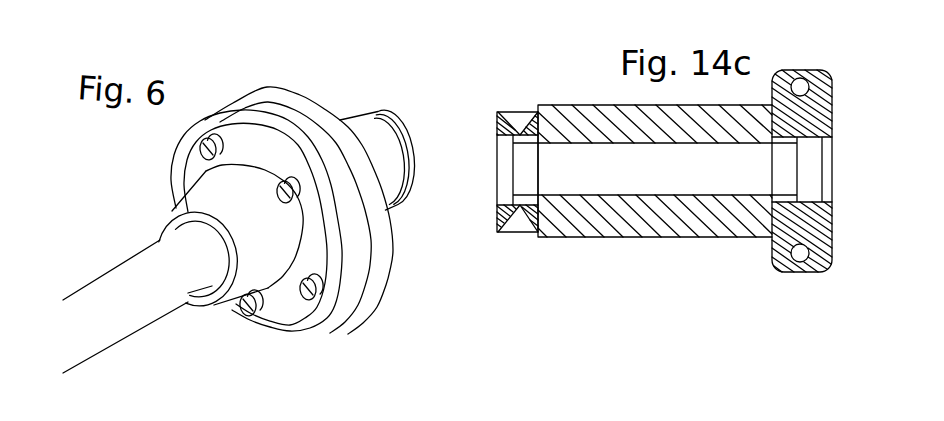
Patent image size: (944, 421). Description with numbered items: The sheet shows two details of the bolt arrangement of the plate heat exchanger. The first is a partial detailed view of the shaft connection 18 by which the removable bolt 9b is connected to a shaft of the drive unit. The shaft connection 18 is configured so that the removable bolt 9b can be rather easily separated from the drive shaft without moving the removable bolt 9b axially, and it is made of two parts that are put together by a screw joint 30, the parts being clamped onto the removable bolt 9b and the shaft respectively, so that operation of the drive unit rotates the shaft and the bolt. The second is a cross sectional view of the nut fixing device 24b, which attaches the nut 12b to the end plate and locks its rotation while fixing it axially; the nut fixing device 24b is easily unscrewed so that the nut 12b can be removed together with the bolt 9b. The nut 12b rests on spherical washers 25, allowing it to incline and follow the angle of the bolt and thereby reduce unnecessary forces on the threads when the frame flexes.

In FIG. 6, the shaft connection 18 is at (390, 304).
In FIG. 6, the screw joint 30 is at (203, 158).
In FIG. 6, the removable bolt 9b is at (128, 322).
In FIG. 14C, the nut 12b is at (590, 107).
In FIG. 14C, the spherical washers 25 is at (498, 113).
In FIG. 14C, the nut fixing device 24b is at (792, 72).